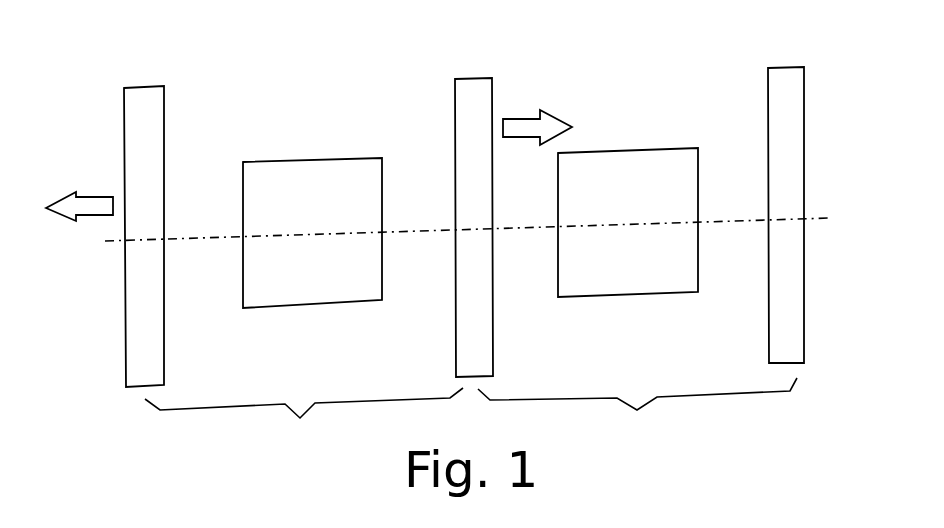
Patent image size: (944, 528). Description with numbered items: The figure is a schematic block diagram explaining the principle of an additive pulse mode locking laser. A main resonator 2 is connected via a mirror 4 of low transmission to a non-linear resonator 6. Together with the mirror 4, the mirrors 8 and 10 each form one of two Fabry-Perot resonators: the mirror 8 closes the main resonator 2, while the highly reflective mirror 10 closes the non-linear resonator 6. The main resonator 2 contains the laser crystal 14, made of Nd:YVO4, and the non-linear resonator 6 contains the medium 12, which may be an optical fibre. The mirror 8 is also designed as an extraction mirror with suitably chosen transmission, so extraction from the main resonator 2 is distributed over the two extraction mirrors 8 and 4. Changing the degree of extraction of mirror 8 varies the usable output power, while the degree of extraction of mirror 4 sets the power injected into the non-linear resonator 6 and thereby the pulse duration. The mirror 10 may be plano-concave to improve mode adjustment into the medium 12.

The main resonator 2 is at (304, 420).
The mirror 4 is at (470, 95).
The non-linear resonator 6 is at (637, 410).
The mirror 8 is at (136, 92).
The highly reflective mirror 10 is at (778, 81).
The medium 12 is at (598, 163).
The laser crystal 14 is at (291, 173).